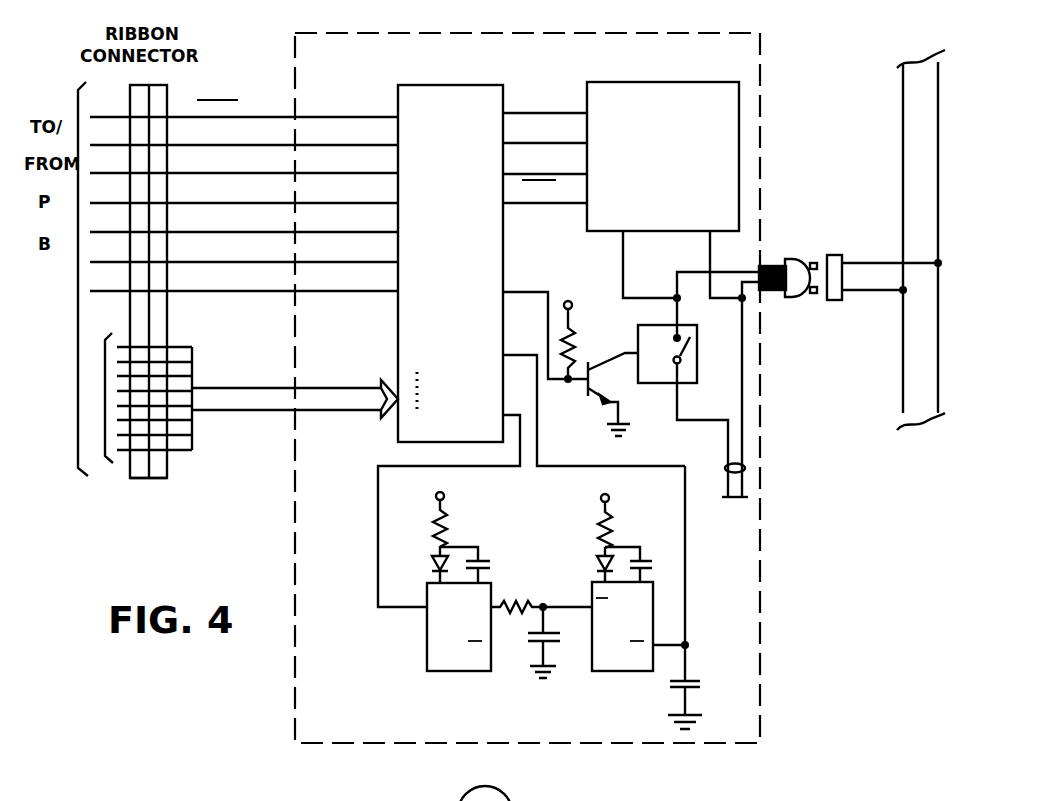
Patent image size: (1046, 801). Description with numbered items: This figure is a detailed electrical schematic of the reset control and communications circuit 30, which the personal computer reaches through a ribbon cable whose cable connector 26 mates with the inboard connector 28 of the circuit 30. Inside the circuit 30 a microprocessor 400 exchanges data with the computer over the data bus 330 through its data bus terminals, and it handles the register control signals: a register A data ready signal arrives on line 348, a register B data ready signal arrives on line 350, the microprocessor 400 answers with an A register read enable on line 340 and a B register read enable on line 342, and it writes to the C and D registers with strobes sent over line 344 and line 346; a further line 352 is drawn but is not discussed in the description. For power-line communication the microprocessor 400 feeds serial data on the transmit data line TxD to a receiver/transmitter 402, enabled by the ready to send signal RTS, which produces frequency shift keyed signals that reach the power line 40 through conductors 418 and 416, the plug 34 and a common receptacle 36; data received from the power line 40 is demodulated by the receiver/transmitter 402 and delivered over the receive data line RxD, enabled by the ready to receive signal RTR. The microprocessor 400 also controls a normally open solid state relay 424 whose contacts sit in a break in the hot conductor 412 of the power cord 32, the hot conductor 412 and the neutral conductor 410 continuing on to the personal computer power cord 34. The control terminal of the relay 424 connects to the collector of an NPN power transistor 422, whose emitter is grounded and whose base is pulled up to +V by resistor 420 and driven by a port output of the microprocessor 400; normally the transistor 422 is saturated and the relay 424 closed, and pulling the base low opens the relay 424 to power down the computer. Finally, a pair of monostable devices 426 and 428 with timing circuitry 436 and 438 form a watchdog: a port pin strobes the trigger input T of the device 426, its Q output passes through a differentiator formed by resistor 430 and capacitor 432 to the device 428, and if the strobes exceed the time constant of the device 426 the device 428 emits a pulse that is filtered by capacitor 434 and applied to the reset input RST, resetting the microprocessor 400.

The cable connector 26 is at (138, 480).
The inboard connector 28 is at (163, 480).
The reset control and communications circuit 30 is at (762, 613).
The power cord 32 is at (770, 266).
The plug 34 is at (746, 470).
The common receptacle 36 is at (838, 255).
The power line 40 is at (903, 340).
The data bus 330 is at (230, 413).
The line 340 is at (265, 175).
The line 342 is at (249, 145).
The line 344 is at (282, 292).
The line 346 is at (263, 265).
The line 348 is at (262, 205).
The line 350 is at (230, 235).
The register B read enable line 352 is at (308, 115).
The microprocessor 400 is at (466, 85).
The receiver/transmitter 402 is at (668, 82).
The neutral conductor 410 is at (745, 386).
The hot conductor 412 is at (697, 420).
The conductor 416 is at (712, 243).
The conductor 418 is at (623, 258).
The resistor 420 is at (574, 346).
The NPN power transistor 422 is at (584, 391).
The solid state relay 424 is at (660, 383).
The monostable device 426 is at (448, 666).
The monostable device 428 is at (608, 671).
The resistor 430 is at (510, 600).
The capacitor 432 is at (530, 643).
The capacitor 434 is at (692, 680).
The timing circuitry 436 is at (455, 541).
The timing circuitry 438 is at (618, 541).